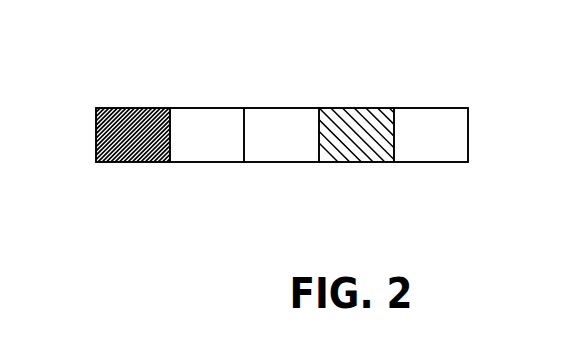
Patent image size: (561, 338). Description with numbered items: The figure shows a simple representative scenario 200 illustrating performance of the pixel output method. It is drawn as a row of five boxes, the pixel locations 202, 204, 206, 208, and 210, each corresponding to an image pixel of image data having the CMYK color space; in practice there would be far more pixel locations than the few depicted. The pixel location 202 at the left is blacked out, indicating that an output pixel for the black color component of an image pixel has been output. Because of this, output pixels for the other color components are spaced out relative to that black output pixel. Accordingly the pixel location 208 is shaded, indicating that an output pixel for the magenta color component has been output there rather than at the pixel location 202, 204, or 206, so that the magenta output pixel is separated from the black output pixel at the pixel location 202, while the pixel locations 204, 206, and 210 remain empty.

The representative scenario 200 is at (60, 166).
The pixel location 202 is at (125, 107).
The pixel location 204 is at (207, 162).
The pixel location 206 is at (283, 107).
The pixel location 208 is at (363, 162).
The pixel location 210 is at (433, 107).